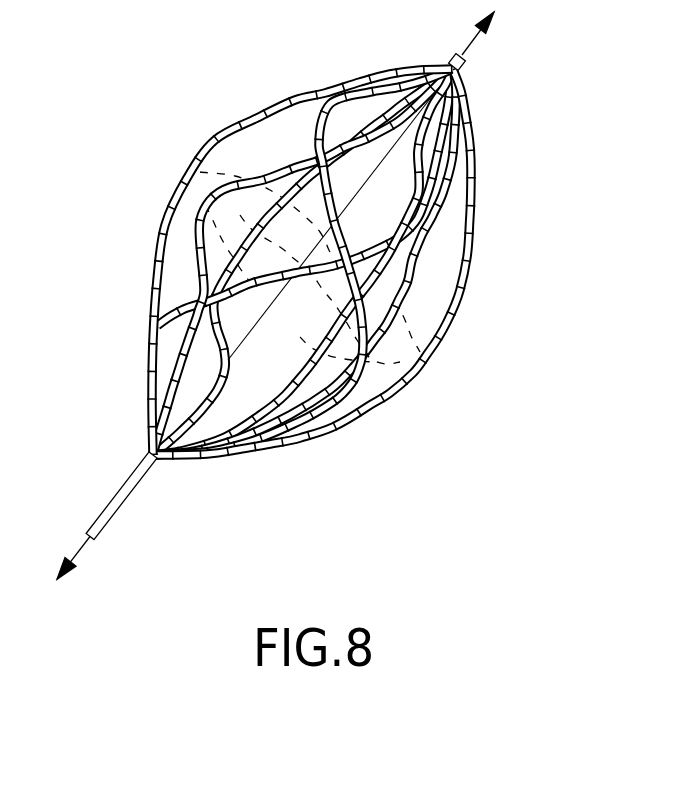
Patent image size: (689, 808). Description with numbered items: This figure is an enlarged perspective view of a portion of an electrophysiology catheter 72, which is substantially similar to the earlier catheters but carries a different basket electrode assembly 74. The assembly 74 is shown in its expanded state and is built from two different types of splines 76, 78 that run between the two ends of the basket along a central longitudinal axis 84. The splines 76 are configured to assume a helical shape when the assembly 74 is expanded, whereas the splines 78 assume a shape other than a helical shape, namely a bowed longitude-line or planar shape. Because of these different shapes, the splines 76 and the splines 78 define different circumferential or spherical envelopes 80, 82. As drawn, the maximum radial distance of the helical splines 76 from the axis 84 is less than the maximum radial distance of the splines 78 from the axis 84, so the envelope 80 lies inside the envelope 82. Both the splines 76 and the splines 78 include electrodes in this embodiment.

The electrophysiology catheter 72 is at (296, 295).
The basket electrode assembly 74 is at (223, 101).
The splines 76 is at (163, 323).
The splines 78 is at (471, 165).
The circumferential or spherical envelope 80 is at (224, 264).
The circumferential or spherical envelope 82 is at (413, 338).
The central longitudinal axis 84 is at (470, 47).